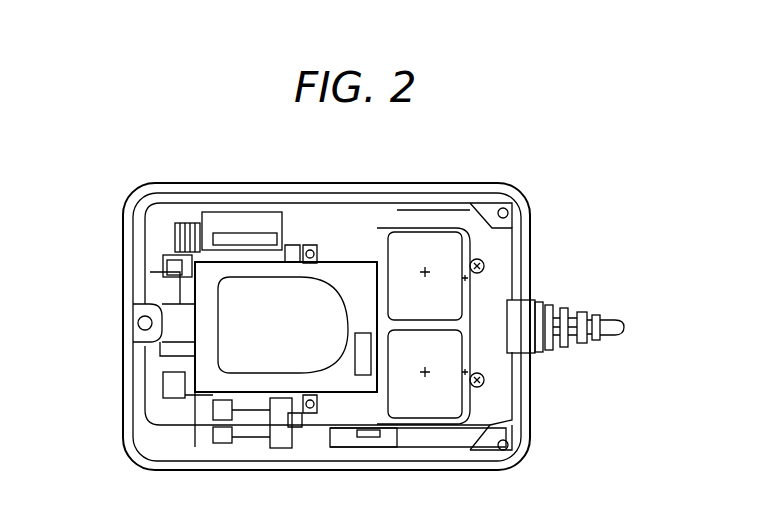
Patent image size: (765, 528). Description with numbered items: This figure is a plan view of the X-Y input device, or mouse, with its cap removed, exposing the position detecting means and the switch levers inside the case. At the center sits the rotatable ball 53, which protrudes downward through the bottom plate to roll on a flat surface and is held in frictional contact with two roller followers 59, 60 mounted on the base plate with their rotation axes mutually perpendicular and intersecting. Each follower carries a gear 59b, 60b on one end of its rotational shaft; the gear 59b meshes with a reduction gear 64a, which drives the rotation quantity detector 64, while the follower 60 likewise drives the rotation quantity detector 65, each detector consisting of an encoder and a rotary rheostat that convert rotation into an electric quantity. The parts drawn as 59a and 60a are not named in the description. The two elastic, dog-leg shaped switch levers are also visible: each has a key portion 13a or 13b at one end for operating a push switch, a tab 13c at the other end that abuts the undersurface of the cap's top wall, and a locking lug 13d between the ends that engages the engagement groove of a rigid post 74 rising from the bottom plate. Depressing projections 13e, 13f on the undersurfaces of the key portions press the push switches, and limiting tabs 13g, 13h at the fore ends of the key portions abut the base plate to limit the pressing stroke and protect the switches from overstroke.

The key portion 13a is at (450, 240).
The key portion 13b is at (450, 410).
The tab 13c is at (124, 333).
The locking lug 13d is at (312, 245).
The depressing projection 13e is at (425, 268).
The depressing projection 13f is at (425, 378).
The limiting tab 13g is at (467, 280).
The limiting tab 13h is at (467, 372).
The rotatable ball 53 is at (232, 352).
The roller follower 59 is at (165, 318).
The bracket arm 59a is at (183, 290).
The gear 59b is at (183, 238).
The roller follower 60 is at (280, 448).
The switch terminal 60a is at (248, 430).
The gear 60b is at (370, 437).
The rotation quantity detector 64 is at (242, 220).
The reduction gear 64a is at (212, 228).
The rotation quantity detector 65 is at (360, 363).
The post 74 is at (292, 243).